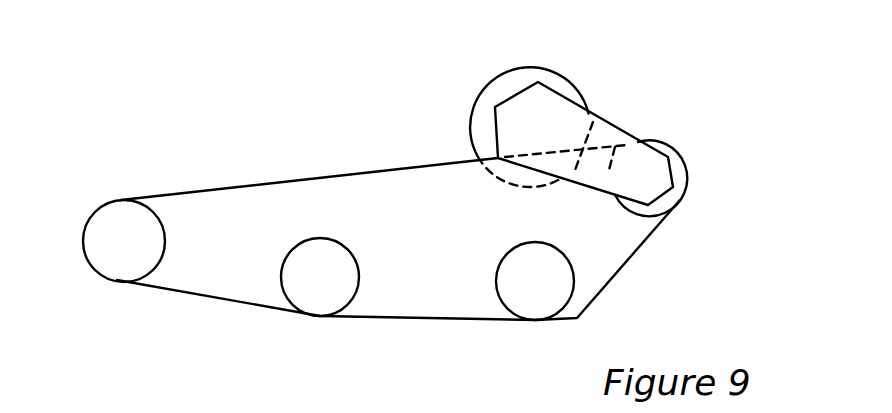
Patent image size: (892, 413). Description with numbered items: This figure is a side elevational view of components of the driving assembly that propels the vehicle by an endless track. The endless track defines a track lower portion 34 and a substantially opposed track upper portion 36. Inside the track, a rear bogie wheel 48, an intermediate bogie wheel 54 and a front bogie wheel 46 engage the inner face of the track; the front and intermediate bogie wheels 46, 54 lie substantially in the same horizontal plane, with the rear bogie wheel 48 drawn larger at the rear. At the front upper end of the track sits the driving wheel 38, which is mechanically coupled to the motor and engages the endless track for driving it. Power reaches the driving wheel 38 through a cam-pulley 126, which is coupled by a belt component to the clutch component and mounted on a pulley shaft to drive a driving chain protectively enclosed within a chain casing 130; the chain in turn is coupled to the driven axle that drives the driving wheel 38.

The track upper portion 36 is at (374, 171).
The track lower portion 34 is at (430, 319).
The rear bogie wheel 48 is at (104, 270).
The intermediate bogie wheel 54 is at (340, 314).
The front bogie wheel 46 is at (537, 320).
The cam-pulley 126 is at (570, 80).
The chain casing 130 is at (604, 132).
The driving wheel 38 is at (684, 193).